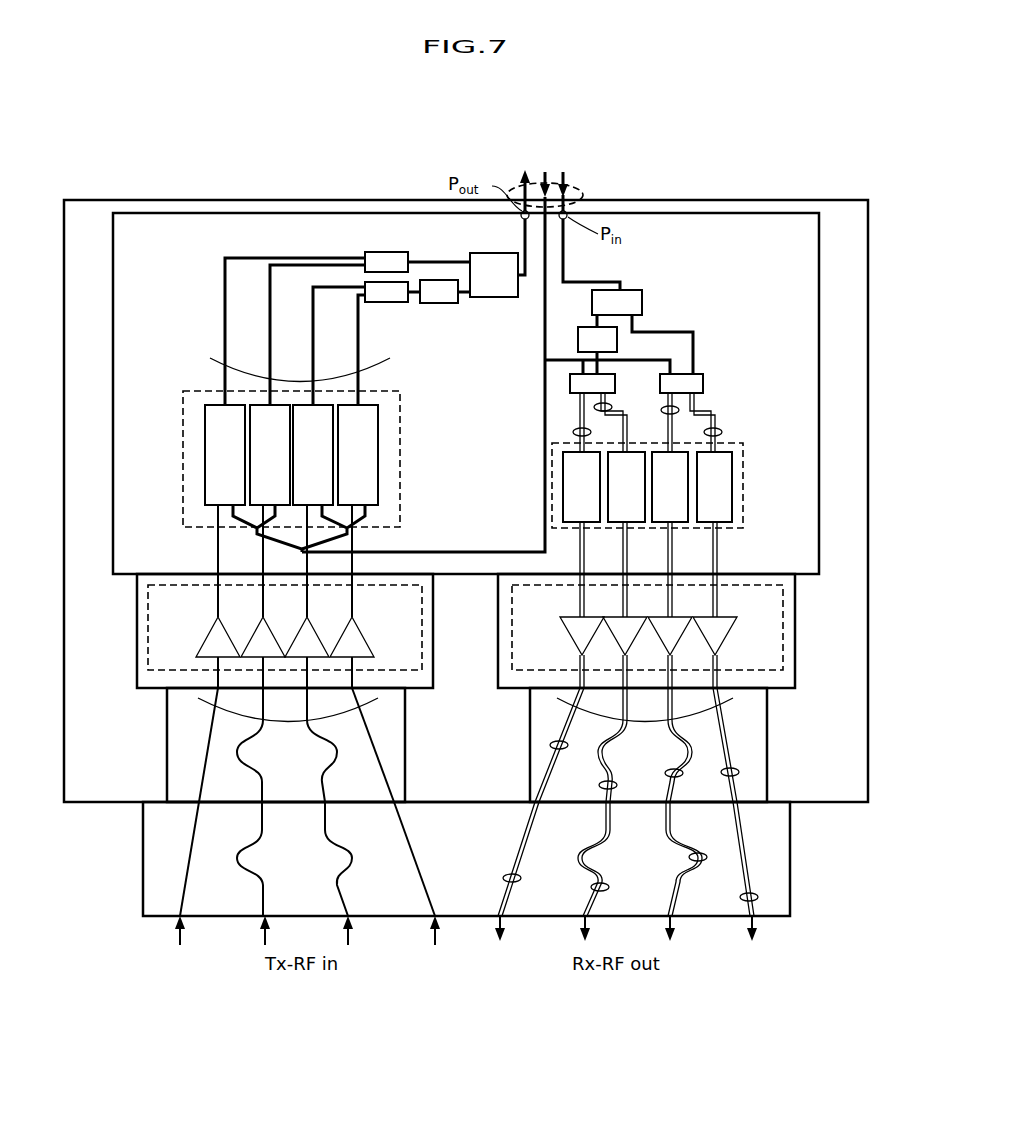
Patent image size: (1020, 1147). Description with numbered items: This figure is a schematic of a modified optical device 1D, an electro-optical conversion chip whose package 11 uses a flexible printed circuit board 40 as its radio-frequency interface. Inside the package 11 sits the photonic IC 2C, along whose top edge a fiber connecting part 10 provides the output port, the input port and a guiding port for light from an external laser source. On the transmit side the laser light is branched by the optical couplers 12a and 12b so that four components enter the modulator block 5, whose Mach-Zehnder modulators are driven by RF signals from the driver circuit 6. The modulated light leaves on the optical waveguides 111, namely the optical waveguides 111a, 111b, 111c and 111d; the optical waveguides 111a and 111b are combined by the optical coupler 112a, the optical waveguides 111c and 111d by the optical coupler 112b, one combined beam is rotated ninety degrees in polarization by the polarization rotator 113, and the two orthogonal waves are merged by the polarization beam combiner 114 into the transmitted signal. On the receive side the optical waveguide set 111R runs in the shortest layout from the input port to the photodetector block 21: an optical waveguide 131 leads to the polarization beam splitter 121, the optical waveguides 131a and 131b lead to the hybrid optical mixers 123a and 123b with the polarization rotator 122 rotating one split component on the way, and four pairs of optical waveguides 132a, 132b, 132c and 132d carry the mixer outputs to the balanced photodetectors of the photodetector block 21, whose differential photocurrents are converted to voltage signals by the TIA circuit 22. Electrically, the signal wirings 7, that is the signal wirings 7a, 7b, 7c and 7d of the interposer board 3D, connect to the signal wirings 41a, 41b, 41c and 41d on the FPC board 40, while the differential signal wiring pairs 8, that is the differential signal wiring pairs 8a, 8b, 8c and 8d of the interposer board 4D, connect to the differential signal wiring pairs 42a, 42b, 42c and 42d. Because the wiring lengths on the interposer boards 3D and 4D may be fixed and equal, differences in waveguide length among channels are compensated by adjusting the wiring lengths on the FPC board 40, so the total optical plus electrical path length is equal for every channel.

The optical device 1D is at (853, 138).
The package 11 is at (190, 200).
The optical integrated circuit chip 2C is at (819, 241).
The fiber connecting part 10 is at (583, 190).
The optical waveguide 111 is at (210, 360).
The optical waveguide 111a is at (225, 263).
The optical waveguide 111b is at (270, 288).
The optical waveguide 111c is at (313, 313).
The optical waveguide 111d is at (358, 339).
The optical coupler 112a is at (385, 252).
The optical coupler 112b is at (385, 302).
The polarization rotator 113 is at (438, 303).
The polarization beam combiner 114 is at (500, 253).
The optical waveguide 131 is at (566, 256).
The polarization beam splitter 121 is at (642, 301).
The optical waveguide 131a is at (597, 321).
The polarization rotator 122 is at (578, 340).
The optical waveguide 131b is at (693, 350).
The optical waveguide set 111R is at (700, 394).
The 90° hybrid optical mixer 123a is at (570, 385).
The 90° hybrid optical mixer 123b is at (703, 382).
The optical waveguide pair 132a is at (574, 432).
The optical waveguide pair 132b is at (596, 411).
The optical waveguide pair 132c is at (680, 410).
The optical waveguide pair 132d is at (722, 432).
The photodetector block 21 is at (743, 489).
The modulator block 5 is at (183, 449).
The optical coupler 12a is at (240, 528).
The optical coupler 12b is at (352, 528).
The driver circuit 6 is at (148, 634).
The TIA circuit 22 is at (783, 623).
The interposer board 3D is at (167, 750).
The interposer board 4D is at (767, 744).
The RF wiring 7 is at (198, 712).
The signal wiring 7a is at (202, 788).
The signal wiring 7b is at (262, 783).
The signal wiring 7c is at (322, 776).
The signal wiring 7d is at (379, 758).
The RF wiring 8 is at (732, 712).
The differential signal wiring pair 8a is at (556, 745).
The differential signal wiring pair 8b is at (602, 785).
The differential signal wiring pair 8c is at (672, 773).
The differential signal wiring pair 8d is at (733, 772).
The flexible printed circuit board 40 is at (790, 862).
The signal wiring 41a is at (189, 877).
The signal wiring 41b is at (262, 890).
The signal wiring 41c is at (354, 872).
The signal wiring 41d is at (413, 852).
The differential signal wiring pair 42a is at (512, 876).
The differential signal wiring pair 42b is at (592, 887).
The differential signal wiring pair 42c is at (690, 857).
The differential signal wiring pair 42d is at (742, 897).